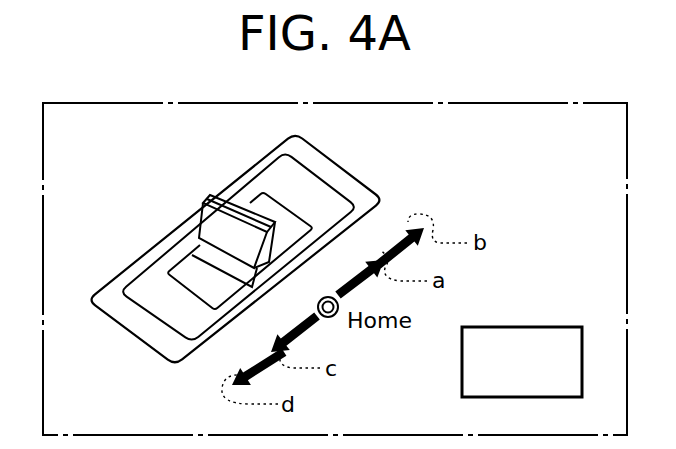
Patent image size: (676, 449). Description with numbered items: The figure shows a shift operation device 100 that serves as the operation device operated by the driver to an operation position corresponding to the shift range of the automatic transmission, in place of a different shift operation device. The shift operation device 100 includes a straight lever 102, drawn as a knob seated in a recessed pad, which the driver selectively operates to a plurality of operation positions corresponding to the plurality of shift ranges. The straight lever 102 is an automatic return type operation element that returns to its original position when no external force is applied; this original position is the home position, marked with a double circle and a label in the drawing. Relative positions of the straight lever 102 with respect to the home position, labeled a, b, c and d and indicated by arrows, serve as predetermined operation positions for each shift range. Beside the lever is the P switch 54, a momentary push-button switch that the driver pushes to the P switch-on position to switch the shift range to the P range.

The shift operation device 100 is at (457, 103).
The straight lever 102 is at (228, 193).
The P switch 54 is at (542, 338).